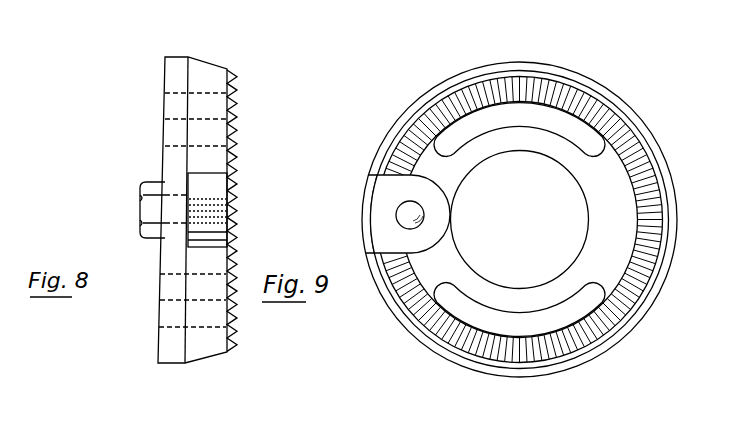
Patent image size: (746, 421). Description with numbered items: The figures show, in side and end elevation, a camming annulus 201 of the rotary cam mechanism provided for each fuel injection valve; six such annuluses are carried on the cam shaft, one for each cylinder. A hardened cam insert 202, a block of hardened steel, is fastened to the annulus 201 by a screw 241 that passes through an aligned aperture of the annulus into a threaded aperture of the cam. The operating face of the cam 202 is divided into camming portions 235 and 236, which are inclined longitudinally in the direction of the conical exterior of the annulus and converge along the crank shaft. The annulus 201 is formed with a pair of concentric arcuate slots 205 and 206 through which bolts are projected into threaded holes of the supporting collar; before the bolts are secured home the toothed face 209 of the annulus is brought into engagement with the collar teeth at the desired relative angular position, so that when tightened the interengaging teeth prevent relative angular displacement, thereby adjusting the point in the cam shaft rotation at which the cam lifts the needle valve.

In FIG. 8, the camming annulus 201 is at (207, 77).
In FIG. 9, the camming annulus 201 is at (677, 220).
In FIG. 8, the hardened cam insert 202 is at (232, 181).
In FIG. 8, the toothed face 209 is at (233, 331).
In FIG. 8, the screw 241 is at (147, 201).
In FIG. 9, the arcuate slot 205 is at (478, 121).
In FIG. 9, the arcuate slot 206 is at (485, 324).
In FIG. 9, the camming portion 235 is at (374, 191).
In FIG. 9, the camming portion 236 is at (372, 230).